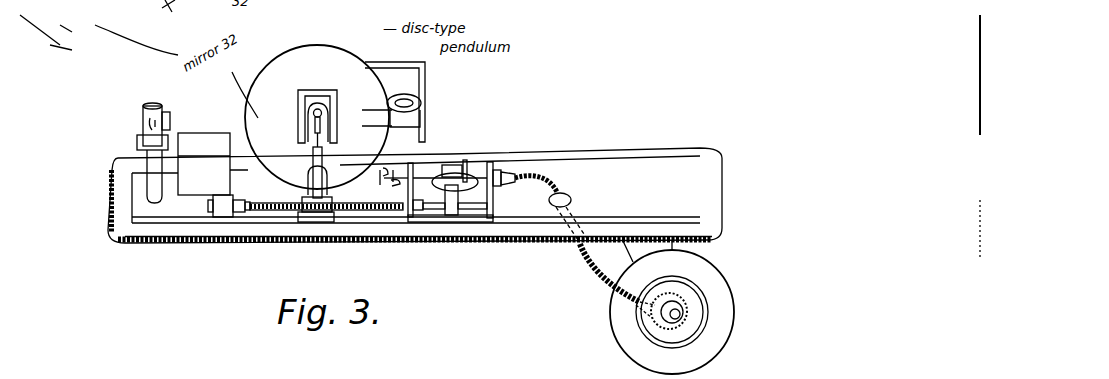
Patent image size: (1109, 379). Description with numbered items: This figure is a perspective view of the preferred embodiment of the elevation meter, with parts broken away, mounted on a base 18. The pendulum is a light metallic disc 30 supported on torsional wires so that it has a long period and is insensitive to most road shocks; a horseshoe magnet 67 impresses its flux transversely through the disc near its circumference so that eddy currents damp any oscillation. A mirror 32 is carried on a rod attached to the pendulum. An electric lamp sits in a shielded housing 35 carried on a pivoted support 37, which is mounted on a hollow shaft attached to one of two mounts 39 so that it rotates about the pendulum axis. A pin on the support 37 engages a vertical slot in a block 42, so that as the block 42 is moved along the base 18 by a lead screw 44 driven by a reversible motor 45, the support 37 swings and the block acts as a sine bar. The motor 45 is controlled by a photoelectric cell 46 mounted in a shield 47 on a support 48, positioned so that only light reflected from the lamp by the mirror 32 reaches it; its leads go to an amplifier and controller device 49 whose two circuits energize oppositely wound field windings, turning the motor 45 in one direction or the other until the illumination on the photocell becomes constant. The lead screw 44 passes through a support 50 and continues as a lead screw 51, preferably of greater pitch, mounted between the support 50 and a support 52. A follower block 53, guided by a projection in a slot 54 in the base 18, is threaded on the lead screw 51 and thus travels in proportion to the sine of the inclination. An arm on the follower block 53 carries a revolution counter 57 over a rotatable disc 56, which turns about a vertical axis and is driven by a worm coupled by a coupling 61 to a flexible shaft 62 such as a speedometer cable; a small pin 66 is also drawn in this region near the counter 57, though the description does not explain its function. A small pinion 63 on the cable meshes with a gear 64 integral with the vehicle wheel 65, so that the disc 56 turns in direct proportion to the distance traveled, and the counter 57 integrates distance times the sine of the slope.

The base 18 is at (292, 223).
The pendulum disc 30 is at (333, 47).
The mirror 32 is at (310, 125).
The shielded housing 35 is at (308, 178).
The pivoted support 37 is at (312, 153).
The mount 39 is at (300, 94).
The block 42 is at (302, 204).
The lead screw 44 is at (265, 212).
The reversible motor 45 is at (228, 213).
The photoelectric cell 46 is at (155, 104).
The shield 47 is at (148, 117).
The support 48 is at (148, 163).
The amplifier and controller device 49 is at (217, 126).
The support 50 is at (408, 216).
The lead screw 51 is at (478, 220).
The support 52 is at (497, 214).
The follower block 53 is at (455, 217).
The slot 54 is at (466, 212).
The rotatable disc 56 is at (496, 168).
The revolution counter 57 is at (450, 165).
The coupling 61 is at (510, 174).
The flexible shaft 62 is at (558, 190).
The pinion 63 is at (638, 317).
The gear 64 is at (690, 299).
The wheel 65 is at (722, 329).
The pin 66 is at (467, 166).
The horseshoe magnet 67 is at (422, 97).